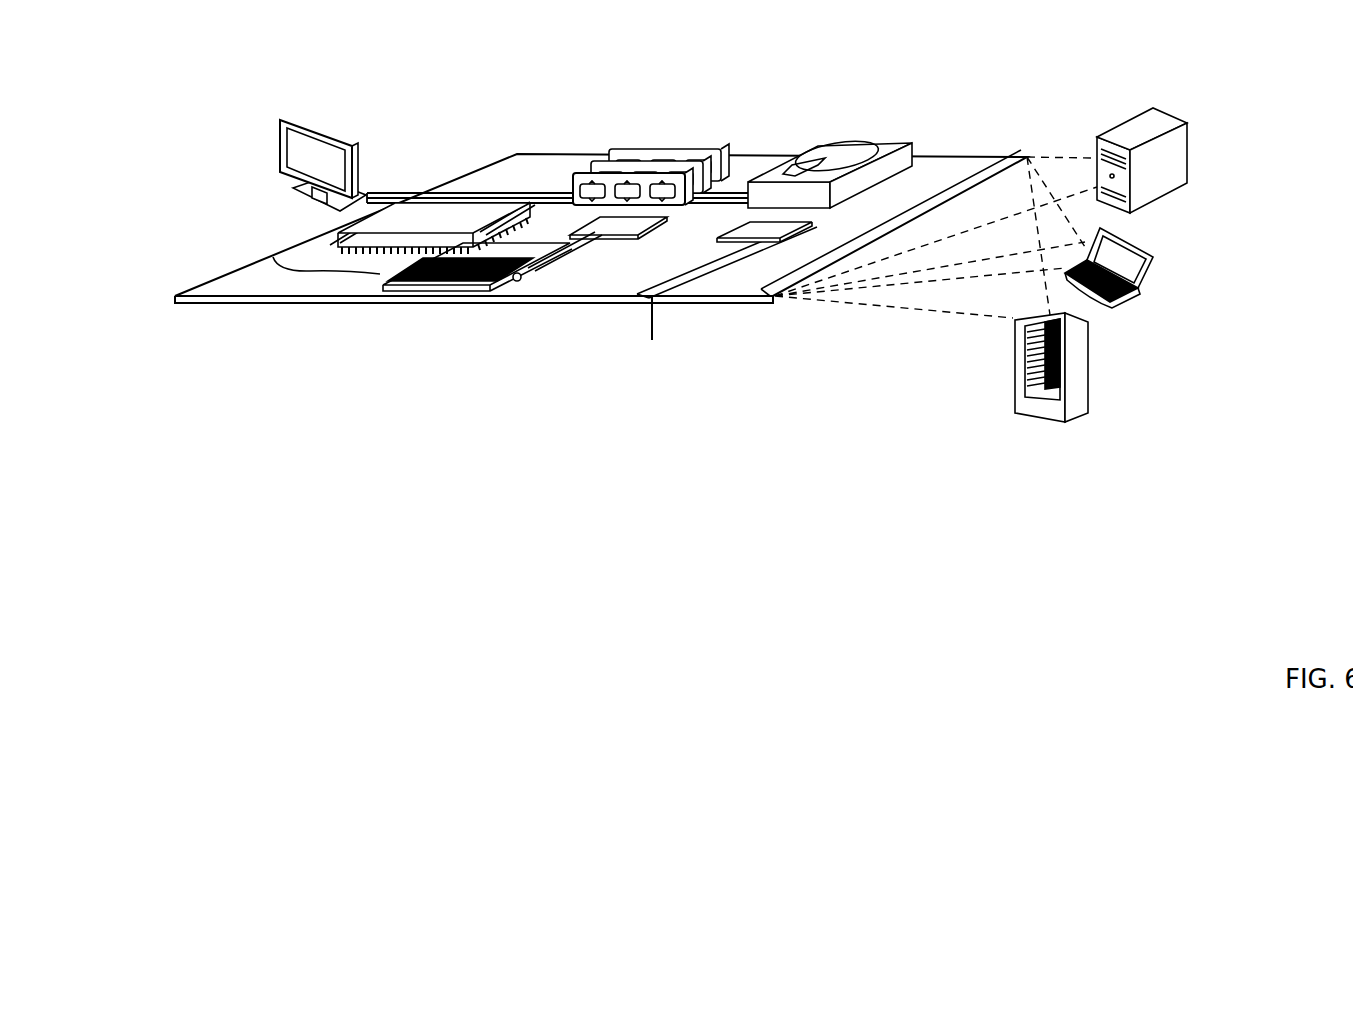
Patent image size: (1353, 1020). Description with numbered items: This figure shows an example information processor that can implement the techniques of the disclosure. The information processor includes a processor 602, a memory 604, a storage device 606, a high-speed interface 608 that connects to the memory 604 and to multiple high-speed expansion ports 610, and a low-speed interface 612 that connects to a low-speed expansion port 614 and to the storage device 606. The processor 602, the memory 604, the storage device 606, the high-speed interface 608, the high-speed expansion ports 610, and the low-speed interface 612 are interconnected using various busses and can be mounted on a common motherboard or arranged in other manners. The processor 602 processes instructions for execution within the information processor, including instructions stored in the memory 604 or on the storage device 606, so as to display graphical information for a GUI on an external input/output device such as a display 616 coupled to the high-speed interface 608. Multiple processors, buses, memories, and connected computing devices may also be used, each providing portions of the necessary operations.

The processor 602 is at (307, 240).
The memory 604 is at (628, 145).
The storage device 606 is at (818, 146).
The high-speed interface 608 is at (543, 194).
The high-speed expansion ports 610 is at (273, 257).
The low-speed interface 612 is at (748, 227).
The low-speed expansion port 614 is at (692, 302).
The display 616 is at (280, 120).